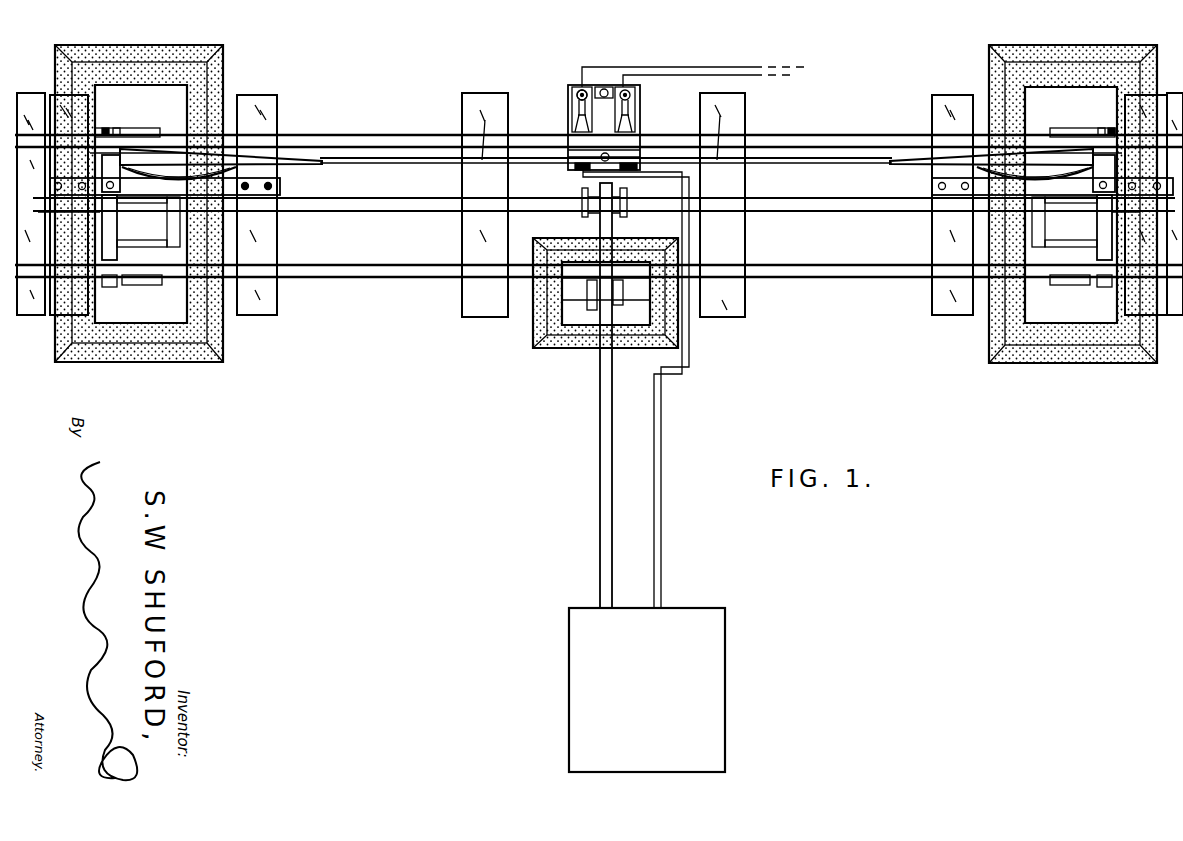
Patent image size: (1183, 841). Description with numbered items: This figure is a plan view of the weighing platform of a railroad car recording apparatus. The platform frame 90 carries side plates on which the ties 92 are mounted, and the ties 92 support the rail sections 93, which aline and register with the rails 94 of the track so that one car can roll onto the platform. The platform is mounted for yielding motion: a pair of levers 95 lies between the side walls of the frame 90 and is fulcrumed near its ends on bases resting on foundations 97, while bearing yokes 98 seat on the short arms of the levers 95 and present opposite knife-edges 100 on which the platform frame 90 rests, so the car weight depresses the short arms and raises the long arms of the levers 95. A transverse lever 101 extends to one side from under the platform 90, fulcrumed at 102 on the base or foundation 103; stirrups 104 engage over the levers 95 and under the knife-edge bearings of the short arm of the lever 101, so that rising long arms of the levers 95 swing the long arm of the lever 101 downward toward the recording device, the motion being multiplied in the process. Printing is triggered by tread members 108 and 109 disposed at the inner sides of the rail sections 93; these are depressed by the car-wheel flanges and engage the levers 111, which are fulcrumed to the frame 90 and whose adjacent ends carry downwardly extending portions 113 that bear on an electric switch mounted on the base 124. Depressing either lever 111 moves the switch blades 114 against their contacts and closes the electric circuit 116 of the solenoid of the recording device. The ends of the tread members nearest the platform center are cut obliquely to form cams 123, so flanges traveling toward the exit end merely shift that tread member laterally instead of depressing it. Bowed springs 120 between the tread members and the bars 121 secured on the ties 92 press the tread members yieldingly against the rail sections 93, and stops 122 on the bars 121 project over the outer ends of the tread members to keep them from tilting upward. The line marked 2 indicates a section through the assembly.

The section line 2 is at (594, 204).
The platform frame 90 is at (836, 280).
The ties 92 is at (470, 306).
The rail sections 93 is at (800, 146).
The rails 94 is at (24, 136).
The levers 95 is at (378, 212).
The foundations 97 is at (190, 356).
The bearing yokes 98 is at (110, 222).
The knife-edges 100 is at (110, 283).
The lever 101 is at (600, 522).
The fulcrum 102 is at (592, 312).
The base or foundation 103 is at (546, 349).
The stirrups 104 is at (625, 213).
The tread member 108 is at (1030, 152).
The tread member 109 is at (170, 152).
The levers 111 is at (358, 157).
The downwardly extending portions 113 is at (612, 154).
The switch blades 114 is at (580, 130).
The electric circuit 116 is at (705, 67).
The bowed springs 120 is at (222, 170).
The bars 121 is at (282, 187).
The stops 122 is at (113, 158).
The cams 123 is at (288, 150).
The base or foundation 124 is at (568, 96).